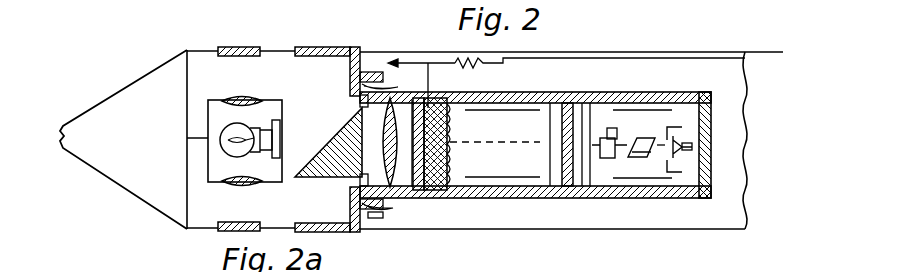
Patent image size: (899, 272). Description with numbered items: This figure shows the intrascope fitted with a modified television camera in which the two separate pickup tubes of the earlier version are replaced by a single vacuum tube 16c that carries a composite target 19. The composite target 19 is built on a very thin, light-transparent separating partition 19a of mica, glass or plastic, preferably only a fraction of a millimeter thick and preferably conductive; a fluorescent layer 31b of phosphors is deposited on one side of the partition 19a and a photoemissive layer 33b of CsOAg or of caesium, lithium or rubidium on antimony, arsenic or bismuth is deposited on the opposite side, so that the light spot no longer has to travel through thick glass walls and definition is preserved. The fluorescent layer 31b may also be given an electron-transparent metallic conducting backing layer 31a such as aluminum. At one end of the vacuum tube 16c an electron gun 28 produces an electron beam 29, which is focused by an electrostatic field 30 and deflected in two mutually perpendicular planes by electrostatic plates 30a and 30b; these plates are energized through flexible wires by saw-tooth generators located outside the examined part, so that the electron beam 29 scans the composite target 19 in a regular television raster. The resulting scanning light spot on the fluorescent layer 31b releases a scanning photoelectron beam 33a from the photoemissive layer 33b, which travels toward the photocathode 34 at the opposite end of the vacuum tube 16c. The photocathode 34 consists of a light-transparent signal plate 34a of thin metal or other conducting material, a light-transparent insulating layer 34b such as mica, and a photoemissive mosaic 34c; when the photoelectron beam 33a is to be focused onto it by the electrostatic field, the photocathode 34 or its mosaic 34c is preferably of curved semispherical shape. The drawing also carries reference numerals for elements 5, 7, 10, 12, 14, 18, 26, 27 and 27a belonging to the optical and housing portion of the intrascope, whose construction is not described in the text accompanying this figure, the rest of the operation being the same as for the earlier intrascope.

The lamp housing 5 is at (268, 101).
The lamp 7 is at (245, 157).
The lens 10 is at (243, 97).
The retaining ring 12 is at (233, 46).
The housing 14 is at (480, 198).
The vacuum tube 16c is at (487, 103).
The end wall 18 is at (320, 46).
The composite target 19 is at (549, 81).
The separating partition 19a is at (566, 187).
The casing 26 is at (279, 48).
The end wall 27 is at (350, 201).
The spring 27a is at (390, 211).
The electron gun 28 is at (690, 131).
The electron beam 29 is at (677, 128).
The electrostatic field 30 is at (630, 113).
The electrostatic plates 30a is at (606, 158).
The electrostatic plates 30b is at (641, 158).
The conducting backing layer 31a is at (590, 127).
The fluorescent layer 31b is at (582, 106).
The photoelectron beam 33a is at (488, 147).
The photoemissive layer 33b is at (560, 179).
The photocathode 34 is at (420, 208).
The signal plate 34a is at (410, 190).
The insulating layer 34b is at (447, 178).
The photoemissive mosaic 34c is at (451, 122).